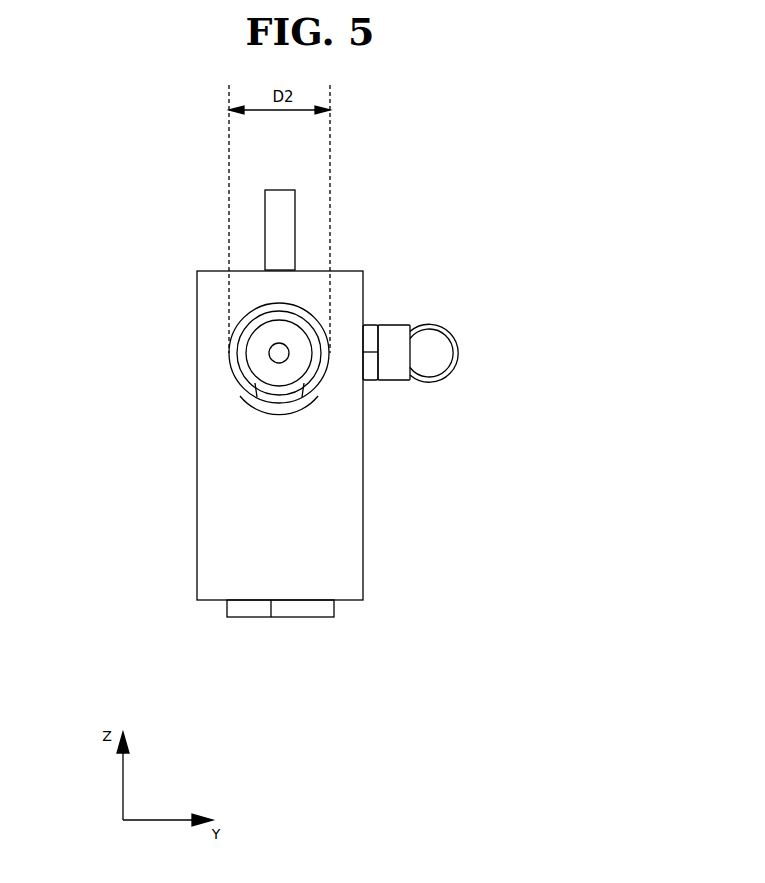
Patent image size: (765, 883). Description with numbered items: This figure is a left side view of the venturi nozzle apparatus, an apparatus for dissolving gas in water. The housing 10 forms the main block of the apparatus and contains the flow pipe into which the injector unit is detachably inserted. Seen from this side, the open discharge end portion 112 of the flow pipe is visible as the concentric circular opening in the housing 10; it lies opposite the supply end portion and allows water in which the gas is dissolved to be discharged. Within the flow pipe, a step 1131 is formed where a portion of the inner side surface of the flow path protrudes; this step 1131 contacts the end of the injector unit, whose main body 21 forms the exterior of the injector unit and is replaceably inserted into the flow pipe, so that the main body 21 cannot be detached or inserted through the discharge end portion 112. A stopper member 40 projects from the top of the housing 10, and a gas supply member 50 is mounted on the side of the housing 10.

The housing 10 is at (355, 288).
The stopper member 40 is at (280, 223).
The step 1131 is at (248, 320).
The main body 21 is at (250, 369).
The discharge end portion 112 is at (318, 388).
The gas supply member 50 is at (433, 366).